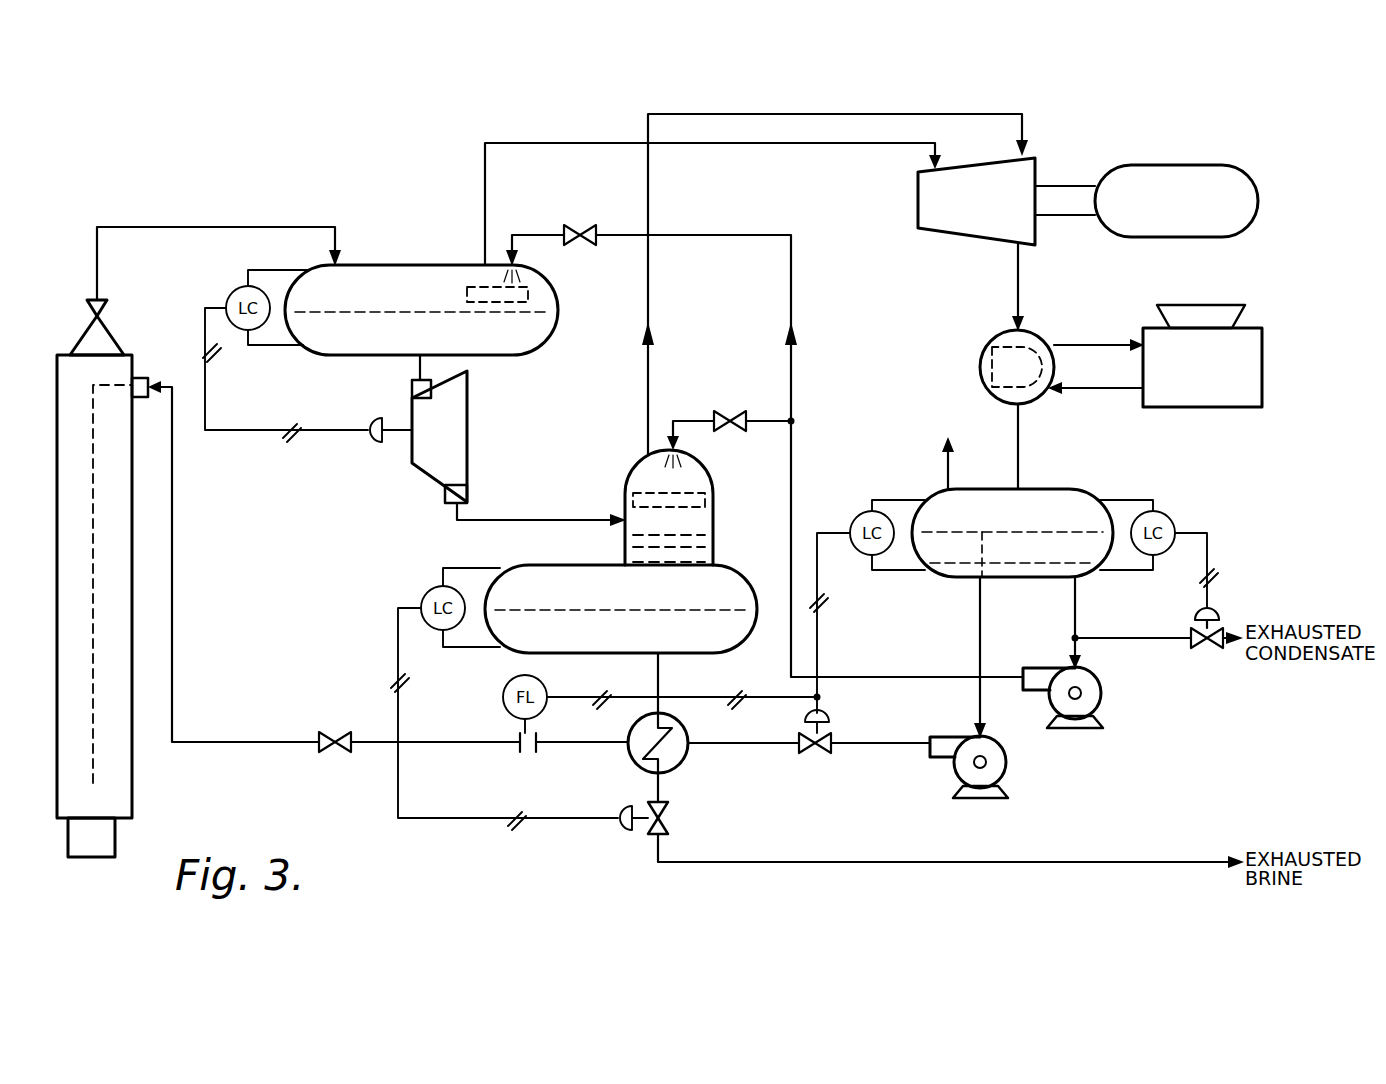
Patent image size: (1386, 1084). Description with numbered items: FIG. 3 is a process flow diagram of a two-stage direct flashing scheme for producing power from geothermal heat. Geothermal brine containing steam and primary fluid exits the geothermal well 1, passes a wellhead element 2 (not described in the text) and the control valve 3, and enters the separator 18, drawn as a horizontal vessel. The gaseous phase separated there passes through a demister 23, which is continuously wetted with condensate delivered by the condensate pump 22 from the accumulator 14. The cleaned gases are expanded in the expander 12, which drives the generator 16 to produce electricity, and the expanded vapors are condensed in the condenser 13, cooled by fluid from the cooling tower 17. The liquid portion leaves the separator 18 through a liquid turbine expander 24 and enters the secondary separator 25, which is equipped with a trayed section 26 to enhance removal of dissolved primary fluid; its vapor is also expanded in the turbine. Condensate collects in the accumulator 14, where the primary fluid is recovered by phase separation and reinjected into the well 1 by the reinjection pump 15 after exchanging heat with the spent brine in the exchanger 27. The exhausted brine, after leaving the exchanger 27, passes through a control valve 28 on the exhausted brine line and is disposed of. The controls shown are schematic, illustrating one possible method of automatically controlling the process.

The geothermal well 1 is at (131, 779).
The wellhead 2 is at (80, 342).
The control valve 3 is at (105, 318).
The expander 12 is at (915, 203).
The condenser 13 is at (987, 343).
The accumulator 14 is at (1052, 489).
The reinjection pump 15 is at (1006, 760).
The generator 16 is at (1190, 165).
The cooling tower 17 is at (1262, 360).
The separator 18 is at (428, 263).
The condensate pump 22 is at (1101, 692).
The demister 23 is at (528, 293).
The liquid turbine expander 24 is at (455, 412).
The secondary separator 25 is at (543, 565).
The trayed section 26 is at (720, 568).
The exchanger 27 is at (678, 770).
The control valve 28 is at (668, 822).